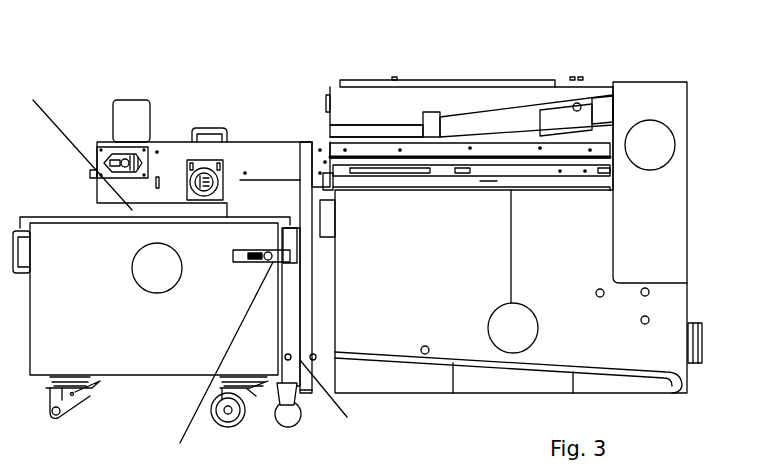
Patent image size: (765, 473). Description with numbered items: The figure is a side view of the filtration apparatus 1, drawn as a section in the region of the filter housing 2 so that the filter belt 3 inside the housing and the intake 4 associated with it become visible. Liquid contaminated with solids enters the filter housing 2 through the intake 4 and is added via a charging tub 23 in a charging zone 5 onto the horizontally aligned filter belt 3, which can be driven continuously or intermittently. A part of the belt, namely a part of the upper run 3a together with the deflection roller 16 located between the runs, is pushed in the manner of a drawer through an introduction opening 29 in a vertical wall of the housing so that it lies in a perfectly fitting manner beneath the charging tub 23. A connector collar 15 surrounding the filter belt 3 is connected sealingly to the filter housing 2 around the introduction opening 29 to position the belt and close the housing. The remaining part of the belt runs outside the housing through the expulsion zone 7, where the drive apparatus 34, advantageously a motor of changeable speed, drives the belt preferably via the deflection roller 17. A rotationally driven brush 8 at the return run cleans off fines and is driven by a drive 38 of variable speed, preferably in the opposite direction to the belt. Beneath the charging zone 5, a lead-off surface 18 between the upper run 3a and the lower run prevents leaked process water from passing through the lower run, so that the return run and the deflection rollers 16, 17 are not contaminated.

The filtration apparatus 1 is at (706, 98).
The filter housing 2 is at (685, 230).
The filter belt 3 is at (386, 134).
The upper run 3a is at (373, 148).
The intake 4 is at (526, 85).
The charging zone 5 is at (438, 134).
The expulsion zone 7 is at (122, 234).
The brush 8 is at (230, 193).
The connector collar 15 is at (322, 137).
The deflection roller 16 is at (600, 165).
The deflection roller 17 is at (115, 155).
The lead-off surface 18 is at (463, 172).
The charging tub 23 is at (500, 113).
The introduction opening 29 is at (333, 182).
The drive apparatus 34 is at (143, 113).
The drive 38 is at (220, 138).